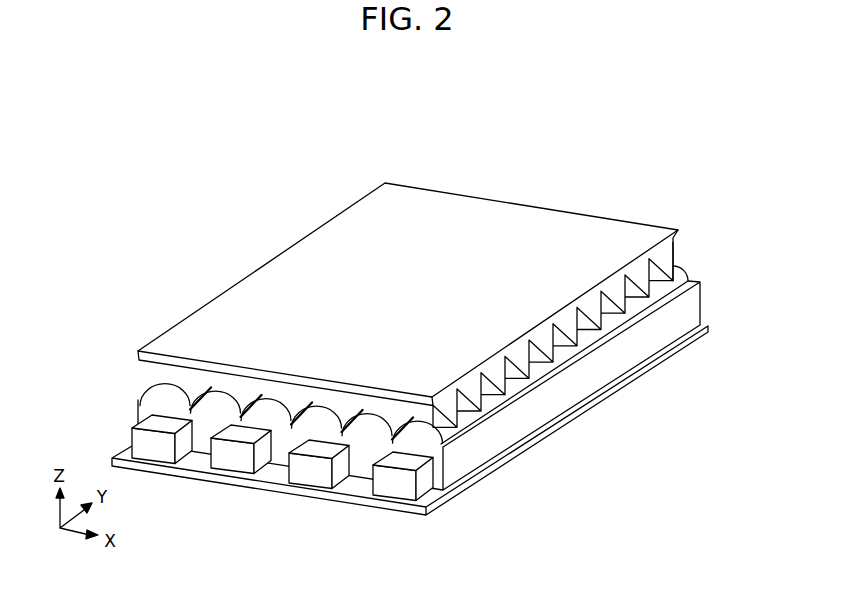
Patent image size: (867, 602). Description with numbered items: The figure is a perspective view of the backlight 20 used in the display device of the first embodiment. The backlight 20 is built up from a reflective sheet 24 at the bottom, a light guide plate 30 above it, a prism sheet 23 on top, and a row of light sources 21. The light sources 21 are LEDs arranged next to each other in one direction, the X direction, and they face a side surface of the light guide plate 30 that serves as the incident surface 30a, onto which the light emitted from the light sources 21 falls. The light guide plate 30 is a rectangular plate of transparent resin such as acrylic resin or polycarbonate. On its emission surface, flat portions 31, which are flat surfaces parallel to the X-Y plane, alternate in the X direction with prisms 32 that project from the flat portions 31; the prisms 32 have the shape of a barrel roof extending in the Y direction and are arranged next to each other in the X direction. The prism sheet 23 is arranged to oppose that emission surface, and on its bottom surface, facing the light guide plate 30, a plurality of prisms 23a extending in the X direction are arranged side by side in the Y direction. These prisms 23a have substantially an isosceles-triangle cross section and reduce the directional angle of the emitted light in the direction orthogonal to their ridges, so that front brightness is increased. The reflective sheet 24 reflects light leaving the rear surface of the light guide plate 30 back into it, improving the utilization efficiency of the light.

The backlight 20 is at (546, 158).
The light sources 21 is at (383, 492).
The prism sheet 23 is at (625, 232).
The prisms 23a is at (674, 256).
The reflective sheet 24 is at (697, 333).
The light guide plate 30 is at (694, 307).
The incident surface 30a is at (137, 406).
The flat portions 31 is at (188, 403).
The prisms 32 is at (155, 398).